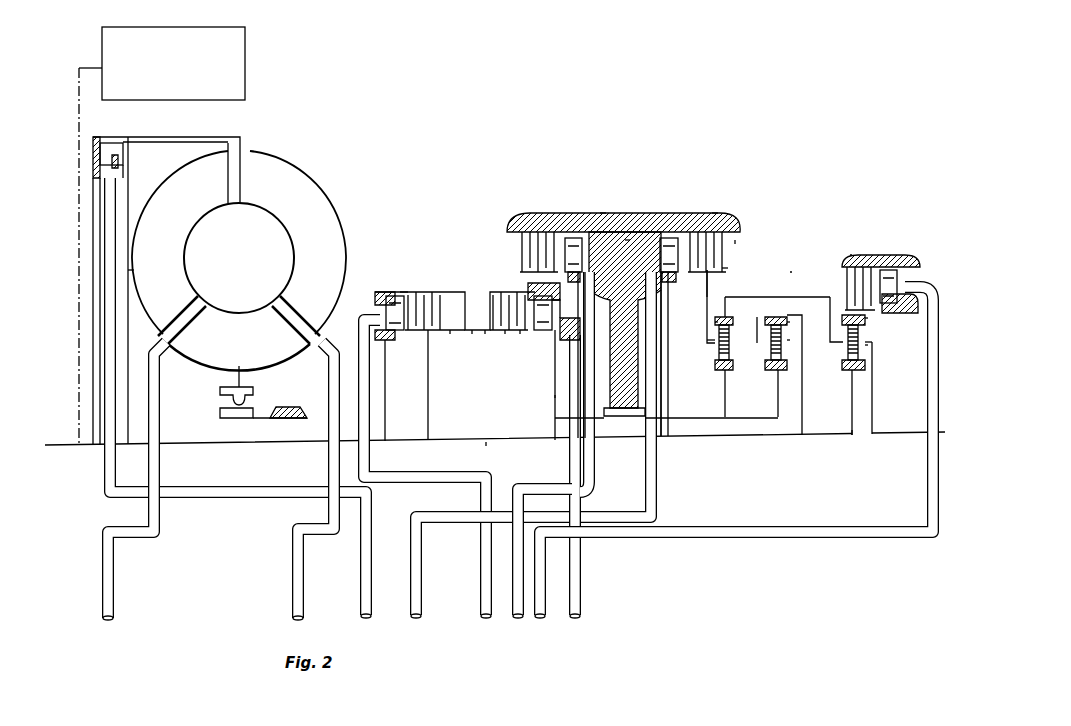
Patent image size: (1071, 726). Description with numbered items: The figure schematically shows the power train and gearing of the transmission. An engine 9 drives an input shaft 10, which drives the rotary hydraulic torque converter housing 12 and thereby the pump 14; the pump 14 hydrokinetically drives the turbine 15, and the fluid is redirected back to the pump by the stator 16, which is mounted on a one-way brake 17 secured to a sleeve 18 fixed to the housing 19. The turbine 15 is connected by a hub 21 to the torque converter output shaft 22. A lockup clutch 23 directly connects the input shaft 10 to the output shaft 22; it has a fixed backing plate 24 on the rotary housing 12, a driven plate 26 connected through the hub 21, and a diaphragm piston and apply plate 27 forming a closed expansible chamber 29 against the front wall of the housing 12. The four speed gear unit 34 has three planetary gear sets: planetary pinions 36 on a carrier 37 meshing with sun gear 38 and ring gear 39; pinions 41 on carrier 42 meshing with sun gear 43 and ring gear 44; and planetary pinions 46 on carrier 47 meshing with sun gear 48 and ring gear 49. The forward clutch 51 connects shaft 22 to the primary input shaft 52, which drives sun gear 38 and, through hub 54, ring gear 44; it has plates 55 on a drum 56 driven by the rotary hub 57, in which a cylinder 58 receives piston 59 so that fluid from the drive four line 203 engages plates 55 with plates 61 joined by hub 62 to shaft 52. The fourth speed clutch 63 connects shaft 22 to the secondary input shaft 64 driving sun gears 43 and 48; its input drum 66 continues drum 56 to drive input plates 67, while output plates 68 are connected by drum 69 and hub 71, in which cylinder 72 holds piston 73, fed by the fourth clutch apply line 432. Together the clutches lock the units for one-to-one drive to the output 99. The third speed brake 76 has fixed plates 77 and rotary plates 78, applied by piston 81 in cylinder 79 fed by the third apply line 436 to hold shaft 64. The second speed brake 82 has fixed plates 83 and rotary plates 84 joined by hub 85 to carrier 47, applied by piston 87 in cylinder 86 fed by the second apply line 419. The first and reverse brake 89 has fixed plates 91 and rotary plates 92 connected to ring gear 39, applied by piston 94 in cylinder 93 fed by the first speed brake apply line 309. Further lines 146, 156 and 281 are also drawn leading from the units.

The engine 9 is at (246, 72).
The input shaft 10 is at (60, 446).
The rotary hydraulic torque converter housing 12 is at (245, 140).
The pump 14 is at (300, 178).
The turbine 15 is at (176, 270).
The stator 16 is at (216, 320).
The one-way brake 17 is at (220, 390).
The sleeve 18 is at (262, 410).
The housing 19 is at (288, 408).
The hub 21 is at (130, 313).
The torque converter output shaft 22 is at (190, 446).
The lockup clutch 23 is at (124, 133).
The fixed backing plate 24 is at (123, 150).
The driven plate 26 is at (118, 160).
The diaphragm piston and apply plate 27 is at (124, 170).
The closed expansible chamber 29 is at (92, 152).
The four speed gear unit 34 is at (790, 276).
The planetary pinions 36 is at (846, 365).
The carrier 37 is at (866, 345).
The sun gear 38 is at (848, 398).
The ring gear 39 is at (866, 318).
The pinions 41 is at (788, 340).
The carrier 42 is at (770, 372).
The sun gear 43 is at (778, 400).
The ring gear 44 is at (780, 297).
The planetary pinions 46 is at (720, 362).
The carrier 47 is at (712, 342).
The sun gear 48 is at (725, 400).
The ring gear 49 is at (716, 324).
The forward clutch 51 is at (400, 295).
The primary input shaft 52 is at (488, 444).
The hub 54 is at (856, 420).
The plates 55 is at (430, 295).
The drum 56 is at (470, 292).
The rotary hub 57 is at (388, 395).
The cylinder 58 is at (385, 298).
The piston 59 is at (408, 298).
The plates 61 is at (450, 330).
The hub 62 is at (430, 403).
The fourth speed clutch 63 is at (520, 335).
The secondary input shaft 64 is at (575, 421).
The input drum 66 is at (487, 332).
The input plates 67 is at (508, 332).
The output plates 68 is at (472, 332).
The drum 69 is at (540, 290).
The hub 71 is at (555, 396).
The cylinder 72 is at (562, 340).
The piston 73 is at (535, 300).
The third speed brake 76 is at (604, 213).
The fixed plates 77 is at (538, 232).
The rotary plates 78 is at (552, 305).
The cylinder 79 is at (628, 240).
The piston 81 is at (572, 238).
The second speed brake 82 is at (712, 213).
The fixed plates 83 is at (735, 242).
The rotary plates 84 is at (726, 268).
The hub 85 is at (707, 285).
The cylinder 86 is at (668, 238).
The piston 87 is at (692, 232).
The first and reverse brake 89 is at (858, 252).
The fixed plates 91 is at (850, 258).
The rotary plates 92 is at (814, 318).
The cylinder 93 is at (912, 290).
The piston 94 is at (893, 272).
The output 99 is at (900, 425).
The conduit 146 is at (294, 598).
The conduit 156 is at (112, 608).
The drive four line 203 is at (483, 598).
The conduit 281 is at (362, 598).
The first speed brake apply line 309 is at (542, 598).
The second apply line 419 is at (420, 598).
The fourth clutch apply line 432 is at (580, 598).
The third apply line 436 is at (517, 600).